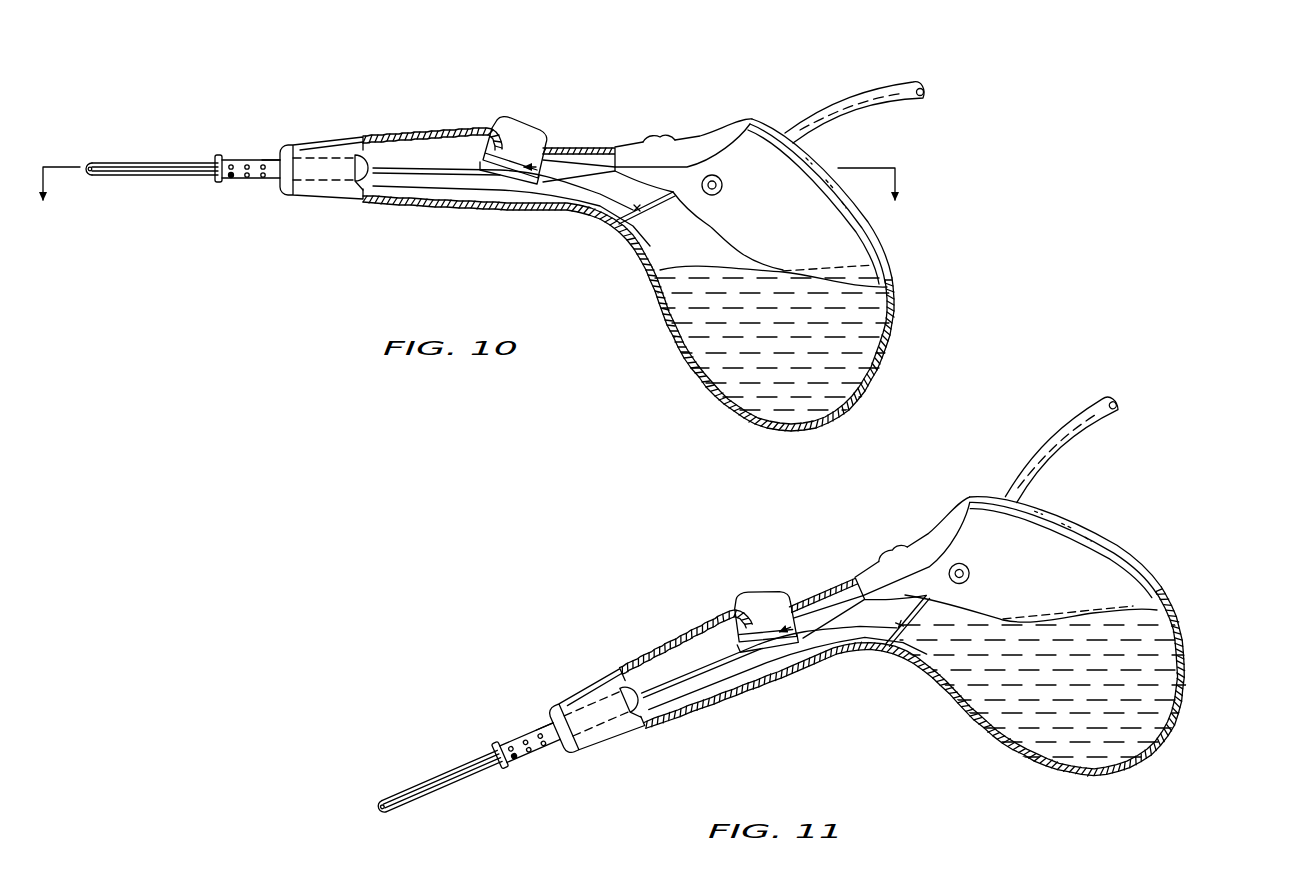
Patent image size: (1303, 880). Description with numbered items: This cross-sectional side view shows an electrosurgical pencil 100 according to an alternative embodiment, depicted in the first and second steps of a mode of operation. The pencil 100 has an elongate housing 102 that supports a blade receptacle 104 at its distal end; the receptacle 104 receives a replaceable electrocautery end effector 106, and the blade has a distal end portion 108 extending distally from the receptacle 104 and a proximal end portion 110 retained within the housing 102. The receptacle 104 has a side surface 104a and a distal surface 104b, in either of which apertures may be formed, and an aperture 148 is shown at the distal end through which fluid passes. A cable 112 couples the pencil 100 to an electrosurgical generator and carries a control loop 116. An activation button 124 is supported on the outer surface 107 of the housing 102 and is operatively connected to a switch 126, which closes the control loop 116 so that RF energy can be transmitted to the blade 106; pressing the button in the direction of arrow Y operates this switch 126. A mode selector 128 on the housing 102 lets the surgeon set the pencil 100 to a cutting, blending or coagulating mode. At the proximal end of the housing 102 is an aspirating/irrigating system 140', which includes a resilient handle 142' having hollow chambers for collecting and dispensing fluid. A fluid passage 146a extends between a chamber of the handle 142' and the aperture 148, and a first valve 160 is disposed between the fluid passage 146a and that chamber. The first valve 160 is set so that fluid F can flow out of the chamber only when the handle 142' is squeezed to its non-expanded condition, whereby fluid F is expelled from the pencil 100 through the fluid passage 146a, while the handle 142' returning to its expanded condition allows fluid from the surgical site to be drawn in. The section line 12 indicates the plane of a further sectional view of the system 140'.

In FIG. 10, the fluid delivery device 100 is at (690, 58).
In FIG. 11, the fluid delivery device 100 is at (592, 550).
In FIG. 10, the housing 102 is at (413, 123).
In FIG. 11, the housing 102 is at (665, 627).
In FIG. 10, the sleeve 104 is at (243, 152).
In FIG. 11, the sleeve 104 is at (518, 727).
In FIG. 10, the proximal end of sleeve 104a is at (272, 158).
In FIG. 11, the proximal end of sleeve 104a is at (540, 723).
In FIG. 10, the flange of sleeve 104b is at (215, 158).
In FIG. 11, the flange of sleeve 104b is at (488, 748).
In FIG. 10, the cannula 106 is at (94, 153).
In FIG. 11, the cannula 106 is at (378, 792).
In FIG. 10, the hub 107 is at (323, 147).
In FIG. 11, the hub 107 is at (592, 687).
In FIG. 10, the distal tip of cannula 108 is at (88, 173).
In FIG. 11, the distal tip of cannula 108 is at (377, 813).
In FIG. 10, the seal 110 is at (355, 182).
In FIG. 11, the seal 110 is at (630, 743).
In FIG. 10, the vent tube 112 is at (885, 92).
In FIG. 11, the vent tube 112 is at (1083, 435).
In FIG. 10, the actuator rod 116 is at (597, 163).
In FIG. 11, the actuator rod 116 is at (818, 608).
In FIG. 10, the button 124 is at (532, 122).
In FIG. 11, the button 124 is at (748, 590).
In FIG. 10, the slider 126 is at (497, 165).
In FIG. 11, the slider 126 is at (752, 640).
In FIG. 10, the vent 128 is at (662, 135).
In FIG. 11, the vent 128 is at (887, 543).
In FIG. 10, the fluid reservoir 140' is at (804, 275).
In FIG. 11, the fluid reservoir 140' is at (1048, 632).
In FIG. 10, the fluid level 142' is at (823, 246).
In FIG. 11, the fluid level 142' is at (1080, 603).
In FIG. 10, the inner tube 146a is at (562, 195).
In FIG. 11, the inner tube 146a is at (785, 657).
In FIG. 10, the aperture 148 is at (230, 178).
In FIG. 11, the aperture 148 is at (512, 757).
In FIG. 10, the valve 160 is at (645, 217).
In FIG. 11, the valve 160 is at (913, 633).
In FIG. 10, the section line 12- 12 is at (471, 203).
In FIG. 10, the direction Y is at (518, 115).
In FIG. 11, the direction Y is at (759, 580).
In FIG. 10, the fluid F is at (880, 345).
In FIG. 11, the fluid F is at (1170, 658).